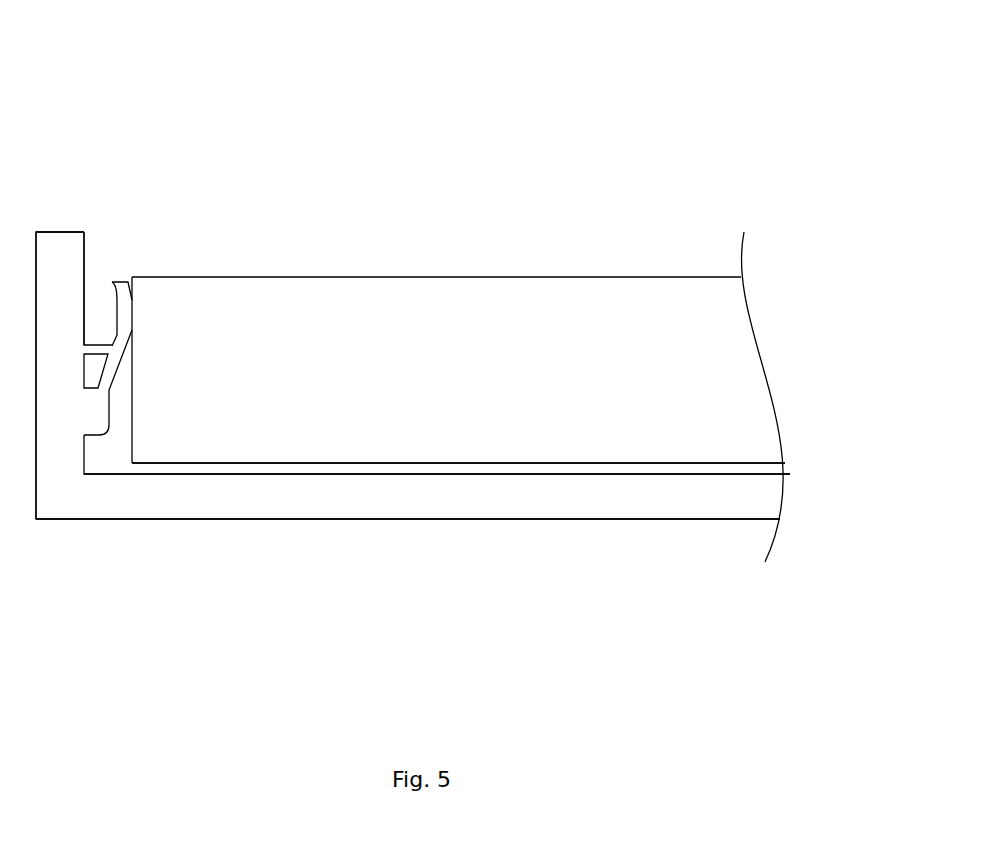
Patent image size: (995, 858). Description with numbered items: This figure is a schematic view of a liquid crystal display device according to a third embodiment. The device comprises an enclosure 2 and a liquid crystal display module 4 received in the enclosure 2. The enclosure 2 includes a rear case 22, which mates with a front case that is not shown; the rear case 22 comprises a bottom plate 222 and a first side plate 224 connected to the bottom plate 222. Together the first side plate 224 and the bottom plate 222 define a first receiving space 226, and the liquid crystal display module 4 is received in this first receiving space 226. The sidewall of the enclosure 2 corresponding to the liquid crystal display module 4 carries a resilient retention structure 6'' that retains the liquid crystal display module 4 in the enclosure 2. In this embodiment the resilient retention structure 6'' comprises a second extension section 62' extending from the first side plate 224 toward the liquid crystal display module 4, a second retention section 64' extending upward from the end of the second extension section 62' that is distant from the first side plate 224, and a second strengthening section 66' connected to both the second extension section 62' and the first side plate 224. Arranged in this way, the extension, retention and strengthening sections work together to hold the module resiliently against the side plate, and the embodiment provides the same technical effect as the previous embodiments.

The enclosure 2 is at (466, 520).
The rear case 22 is at (406, 474).
The bottom plate 222 is at (73, 665).
The first side plate 224 is at (54, 338).
The first receiving space 226 is at (507, 467).
The liquid crystal display module 4 is at (453, 328).
The resilient retention structure 6'' is at (240, 231).
The second extension section 62' is at (240, 269).
The second retention section 64' is at (182, 223).
The second strengthening section 66' is at (115, 245).